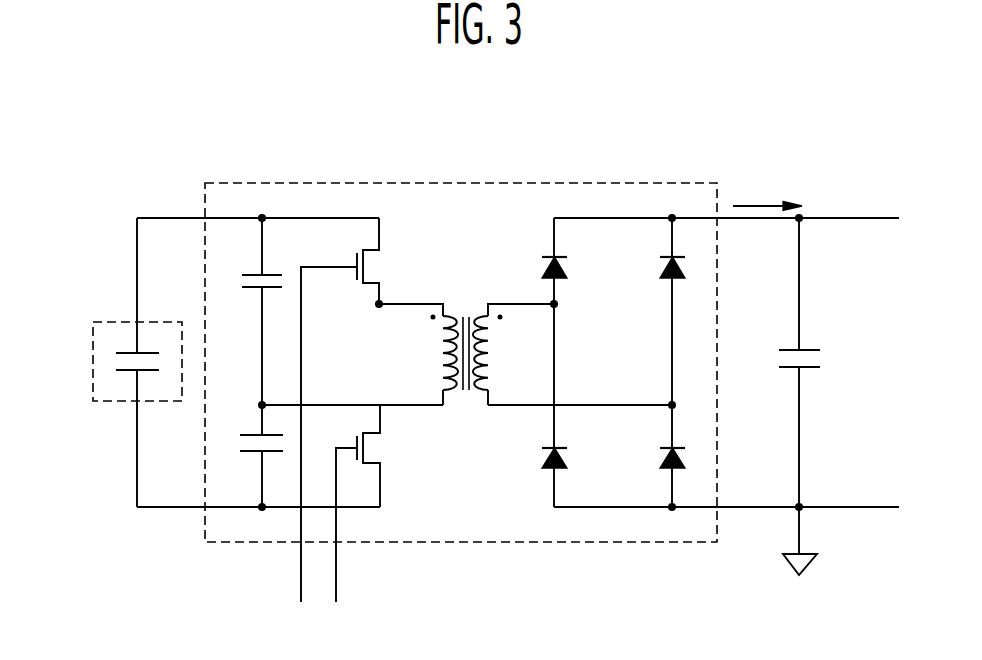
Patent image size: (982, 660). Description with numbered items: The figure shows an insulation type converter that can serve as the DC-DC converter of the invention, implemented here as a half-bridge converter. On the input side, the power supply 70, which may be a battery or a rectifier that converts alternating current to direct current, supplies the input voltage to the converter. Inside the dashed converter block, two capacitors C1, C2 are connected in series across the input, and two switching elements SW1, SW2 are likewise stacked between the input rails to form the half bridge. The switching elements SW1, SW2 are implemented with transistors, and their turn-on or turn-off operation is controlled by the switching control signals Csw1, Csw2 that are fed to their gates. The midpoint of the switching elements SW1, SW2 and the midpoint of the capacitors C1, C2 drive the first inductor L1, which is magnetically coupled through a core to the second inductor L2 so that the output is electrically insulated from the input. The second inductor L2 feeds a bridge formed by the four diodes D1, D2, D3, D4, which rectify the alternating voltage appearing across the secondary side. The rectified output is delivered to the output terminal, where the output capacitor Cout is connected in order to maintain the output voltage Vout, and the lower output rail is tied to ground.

The power supply 70 is at (93, 350).
The capacitor C1 is at (250, 311).
The capacitor C2 is at (250, 456).
The switching element SW1 is at (382, 261).
The switching element SW2 is at (383, 456).
The switching control signal Csw1 is at (315, 449).
The switching control signal Csw2 is at (347, 539).
The inductor L1 is at (424, 354).
The inductor L2 is at (513, 354).
The diode D1 is at (566, 270).
The diode D2 is at (566, 460).
The diode D3 is at (685, 270).
The diode D4 is at (685, 460).
The output capacitor Cout is at (823, 362).
The output voltage Vout is at (767, 193).